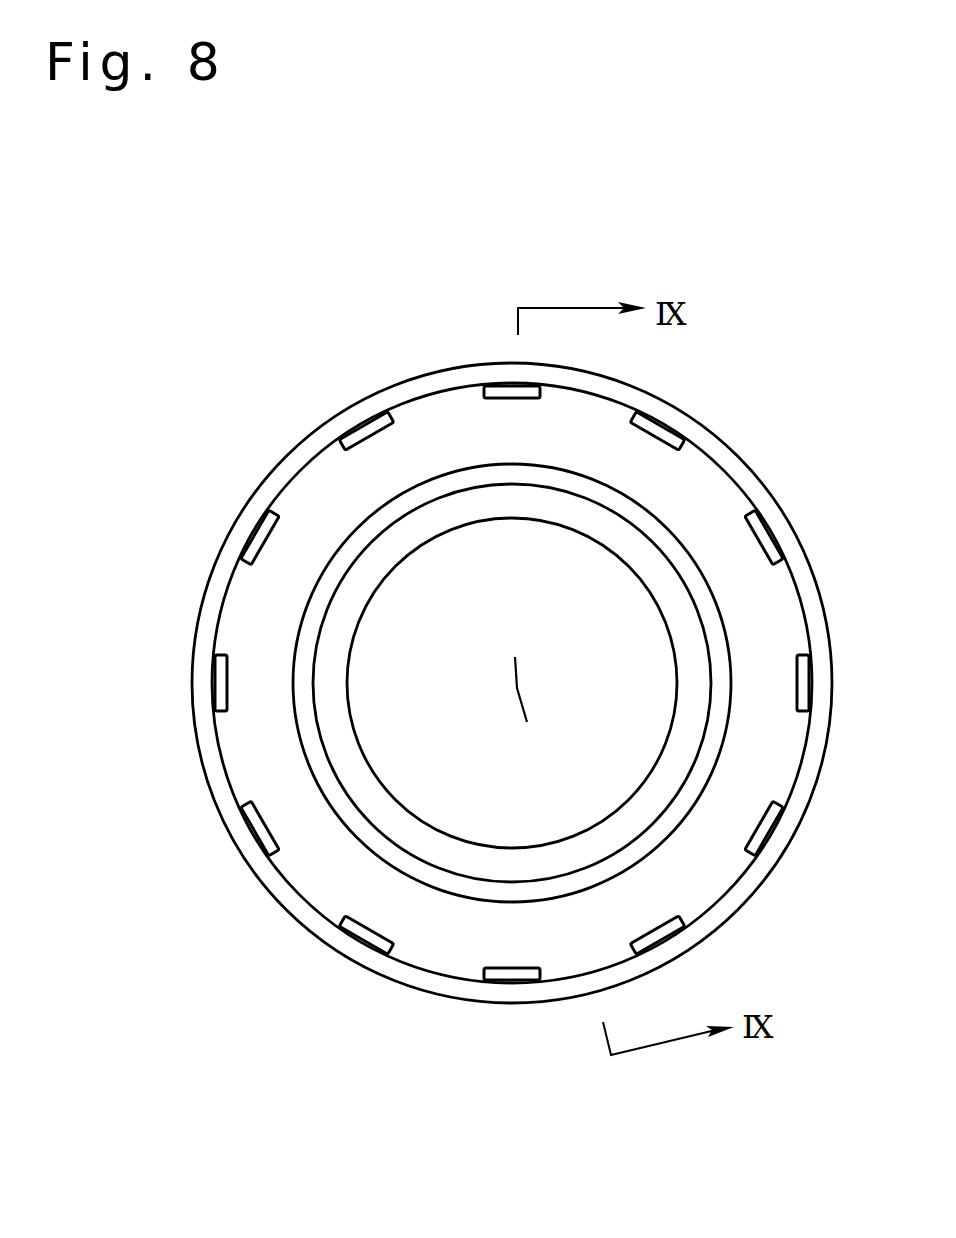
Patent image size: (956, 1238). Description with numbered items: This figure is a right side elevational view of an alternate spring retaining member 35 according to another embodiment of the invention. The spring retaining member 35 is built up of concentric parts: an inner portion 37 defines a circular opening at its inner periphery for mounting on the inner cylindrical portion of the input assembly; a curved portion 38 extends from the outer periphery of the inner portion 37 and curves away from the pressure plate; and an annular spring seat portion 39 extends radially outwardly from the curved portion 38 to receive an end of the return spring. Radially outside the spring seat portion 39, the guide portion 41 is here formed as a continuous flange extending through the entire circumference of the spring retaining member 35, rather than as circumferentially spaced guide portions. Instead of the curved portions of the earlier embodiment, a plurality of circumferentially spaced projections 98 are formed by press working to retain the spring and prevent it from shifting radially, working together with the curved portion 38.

The spring retaining member 35 is at (297, 497).
The inner portion 37 is at (330, 643).
The curved portion 38 is at (350, 548).
The annular spring seat portion 39 is at (280, 575).
The guide portion 41 is at (207, 761).
The projections 98 is at (352, 437).